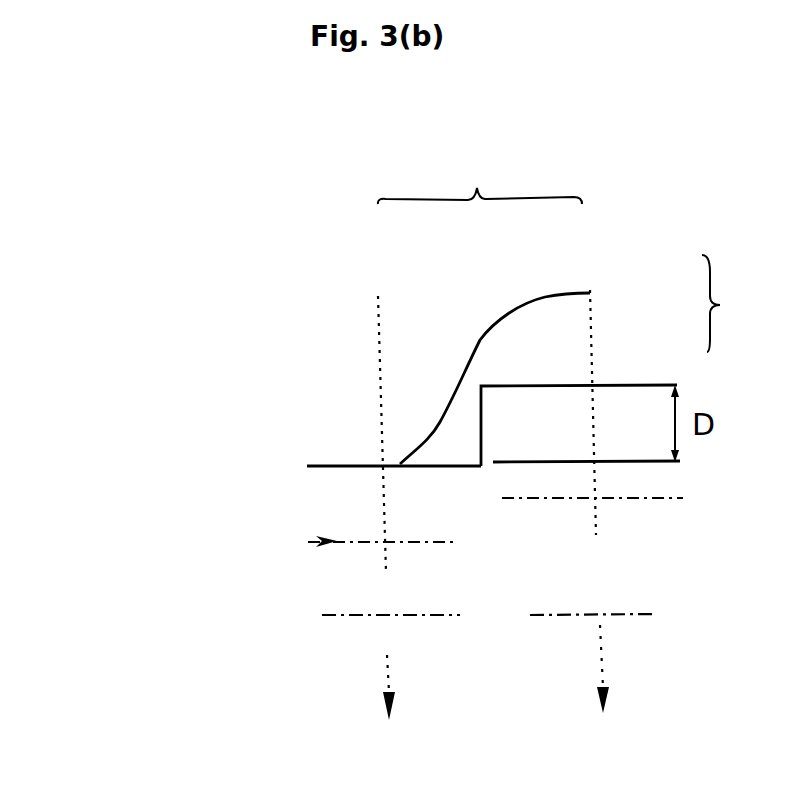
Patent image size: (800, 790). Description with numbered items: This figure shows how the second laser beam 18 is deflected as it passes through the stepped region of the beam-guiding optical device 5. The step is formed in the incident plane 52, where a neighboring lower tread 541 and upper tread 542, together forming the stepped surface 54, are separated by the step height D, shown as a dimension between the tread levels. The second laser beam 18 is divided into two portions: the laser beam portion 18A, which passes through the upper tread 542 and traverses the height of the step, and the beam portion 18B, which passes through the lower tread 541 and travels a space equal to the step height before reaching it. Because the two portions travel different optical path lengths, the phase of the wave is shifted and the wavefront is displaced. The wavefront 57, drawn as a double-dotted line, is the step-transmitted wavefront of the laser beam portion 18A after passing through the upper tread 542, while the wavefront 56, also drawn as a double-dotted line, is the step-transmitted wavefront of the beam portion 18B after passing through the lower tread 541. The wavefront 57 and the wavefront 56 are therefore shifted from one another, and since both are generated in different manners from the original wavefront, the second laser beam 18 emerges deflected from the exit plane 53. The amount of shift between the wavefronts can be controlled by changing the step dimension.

The spark plug insulator assembly 5 is at (712, 206).
The second laser beam 18 is at (480, 177).
The laser beam portion 18A is at (590, 290).
The beam portion 18B is at (378, 296).
The incident plane 52 is at (352, 452).
The exit plane 53 is at (627, 611).
The insulator end portion 54 is at (736, 303).
The lower tread 541 is at (590, 293).
The upper tread 542 is at (580, 385).
The wavefront 56 is at (349, 575).
The wavefront 57 is at (640, 498).